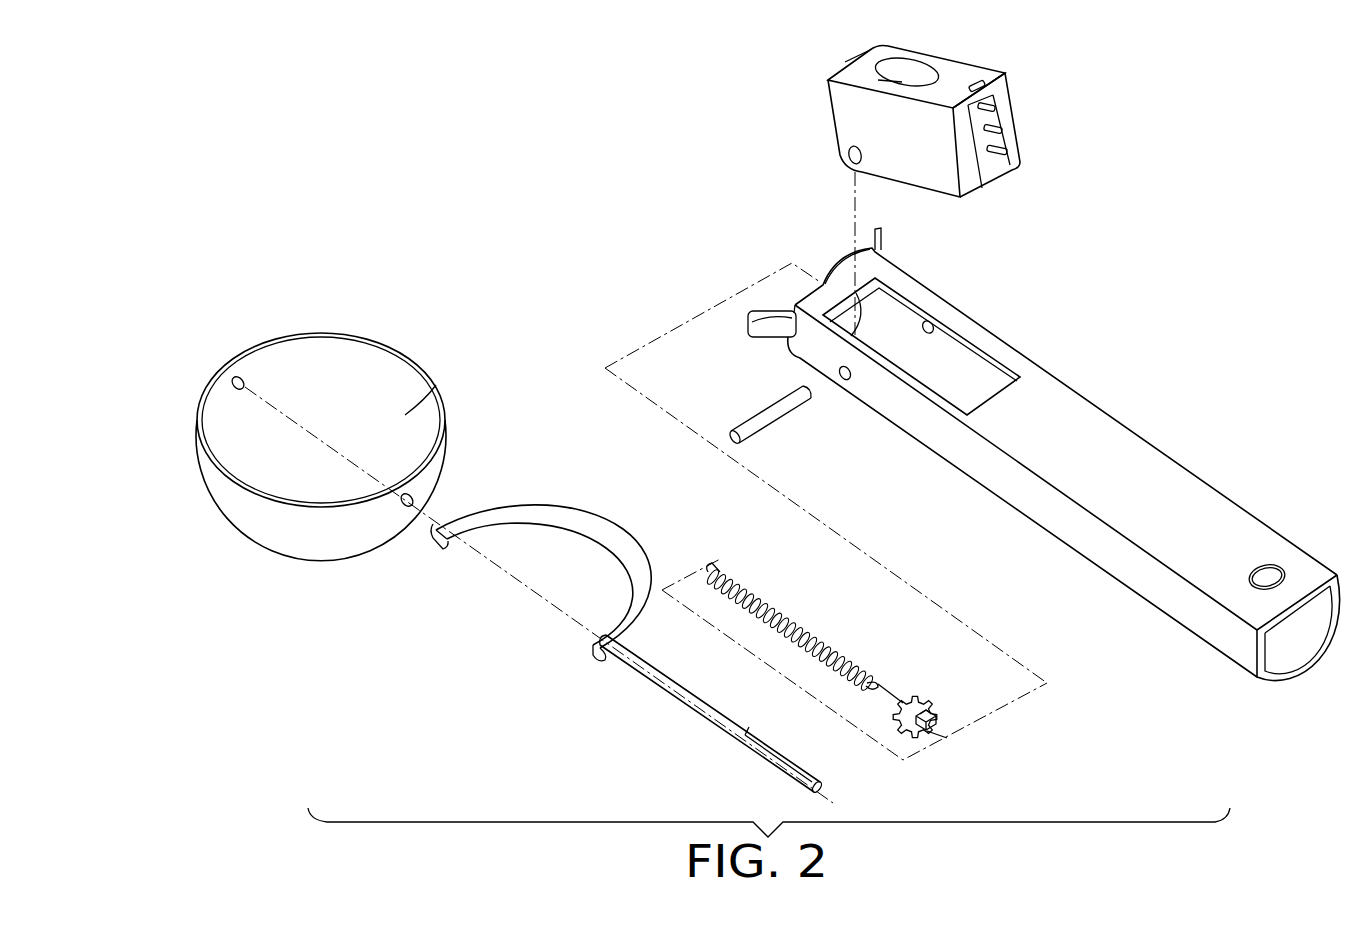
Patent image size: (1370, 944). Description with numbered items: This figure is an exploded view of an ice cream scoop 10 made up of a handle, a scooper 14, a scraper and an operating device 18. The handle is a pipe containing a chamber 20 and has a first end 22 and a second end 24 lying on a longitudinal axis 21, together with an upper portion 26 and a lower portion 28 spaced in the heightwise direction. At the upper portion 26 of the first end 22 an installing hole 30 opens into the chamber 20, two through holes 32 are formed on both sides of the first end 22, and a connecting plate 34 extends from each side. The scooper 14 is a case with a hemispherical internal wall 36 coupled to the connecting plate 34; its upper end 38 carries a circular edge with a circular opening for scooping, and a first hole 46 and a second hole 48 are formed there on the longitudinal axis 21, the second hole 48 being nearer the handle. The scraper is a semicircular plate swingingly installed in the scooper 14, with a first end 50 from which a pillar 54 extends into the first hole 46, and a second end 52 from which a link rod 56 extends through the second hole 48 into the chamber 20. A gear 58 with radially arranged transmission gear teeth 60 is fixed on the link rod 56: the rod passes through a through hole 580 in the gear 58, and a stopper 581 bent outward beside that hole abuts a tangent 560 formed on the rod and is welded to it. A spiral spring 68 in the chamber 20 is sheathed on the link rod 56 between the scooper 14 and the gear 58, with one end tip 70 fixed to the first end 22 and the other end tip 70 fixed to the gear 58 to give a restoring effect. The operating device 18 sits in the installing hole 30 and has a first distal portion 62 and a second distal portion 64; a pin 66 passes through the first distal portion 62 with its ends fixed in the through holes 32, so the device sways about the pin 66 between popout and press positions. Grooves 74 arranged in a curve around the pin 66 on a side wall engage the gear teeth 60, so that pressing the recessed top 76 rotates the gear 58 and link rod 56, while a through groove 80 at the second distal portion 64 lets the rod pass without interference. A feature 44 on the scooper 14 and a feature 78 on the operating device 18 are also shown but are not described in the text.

The ice cream scoop 10 is at (1018, 459).
The scooper 14 is at (362, 440).
The operating device 18 is at (919, 135).
The chamber 20 is at (988, 377).
The longitudinal axis 21 is at (700, 318).
The first end 22 is at (846, 286).
The second end 24 is at (1300, 586).
The upper portion 26 is at (1207, 480).
The lower portion 28 is at (1283, 685).
The installing hole 30 is at (968, 348).
The through holes 32 is at (929, 326).
The connecting plate 34 is at (753, 331).
The hemispherical internal wall 36 is at (418, 407).
The upper end 38 is at (319, 333).
The inner surface 44 is at (383, 362).
The first hole 46 is at (244, 379).
The second hole 48 is at (413, 497).
The first end 50 is at (538, 603).
The second end 52 is at (597, 663).
The pillar 54 is at (433, 525).
The link rod 56 is at (728, 714).
The gear 58 is at (960, 728).
The transmission gear teeth 60 is at (927, 697).
The first distal portion 62 is at (840, 123).
The second distal portion 64 is at (977, 174).
The pin 66 is at (761, 426).
The spiral spring 68 is at (822, 621).
The end tip 70 is at (719, 568).
The grooves 74 is at (992, 98).
The top 76 is at (853, 68).
The hole 78 is at (910, 68).
The through groove 80 is at (990, 173).
The tangent 560 is at (767, 743).
The through hole 580 is at (924, 727).
The stopper 581 is at (938, 711).